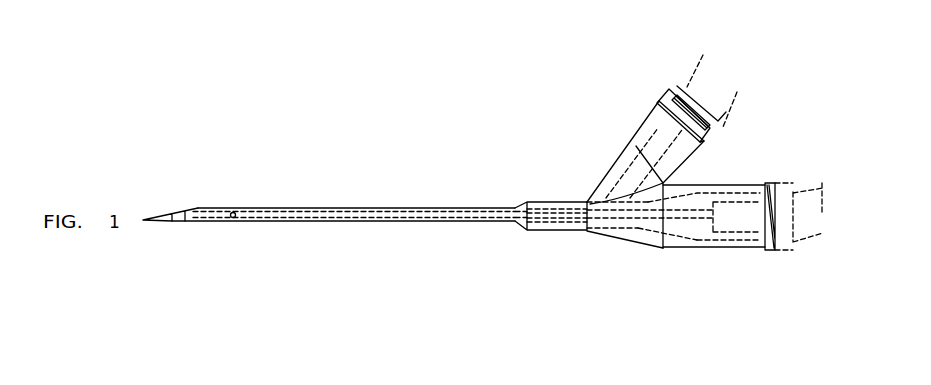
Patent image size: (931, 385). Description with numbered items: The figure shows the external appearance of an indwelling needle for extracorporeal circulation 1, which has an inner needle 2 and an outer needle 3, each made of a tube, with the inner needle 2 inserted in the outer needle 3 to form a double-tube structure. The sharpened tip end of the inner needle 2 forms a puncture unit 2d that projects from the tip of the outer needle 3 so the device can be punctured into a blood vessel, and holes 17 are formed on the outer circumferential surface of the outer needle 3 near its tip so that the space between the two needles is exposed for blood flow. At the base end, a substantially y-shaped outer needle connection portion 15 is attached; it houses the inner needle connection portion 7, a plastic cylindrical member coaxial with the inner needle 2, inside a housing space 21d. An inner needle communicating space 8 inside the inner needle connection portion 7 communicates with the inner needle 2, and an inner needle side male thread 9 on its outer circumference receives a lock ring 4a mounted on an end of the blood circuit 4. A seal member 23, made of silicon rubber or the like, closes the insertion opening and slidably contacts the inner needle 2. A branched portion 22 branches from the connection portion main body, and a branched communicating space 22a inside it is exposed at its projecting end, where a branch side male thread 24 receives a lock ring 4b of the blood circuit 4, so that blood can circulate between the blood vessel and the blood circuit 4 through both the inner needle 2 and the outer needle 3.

The indwelling needle for extracorporeal circulation 1 is at (372, 147).
The inner needle 2 is at (297, 214).
The puncture unit 2d is at (163, 215).
The outer needle 3 is at (304, 201).
The holes 17 is at (226, 204).
The outer needle connection portion 15 is at (571, 177).
The branched portion 22 is at (614, 144).
The branched communicating space 22a is at (653, 140).
The lock ring 4b is at (670, 75).
The blood circuit 4 is at (814, 205).
The branch side male thread 24 is at (705, 130).
The inner needle communicating space 8 is at (738, 207).
The inner needle connection portion 7 is at (692, 224).
The housing space 21d is at (736, 217).
The seal member 23 is at (642, 220).
The inner needle side male thread 9 is at (762, 243).
The lock ring 4a is at (775, 230).